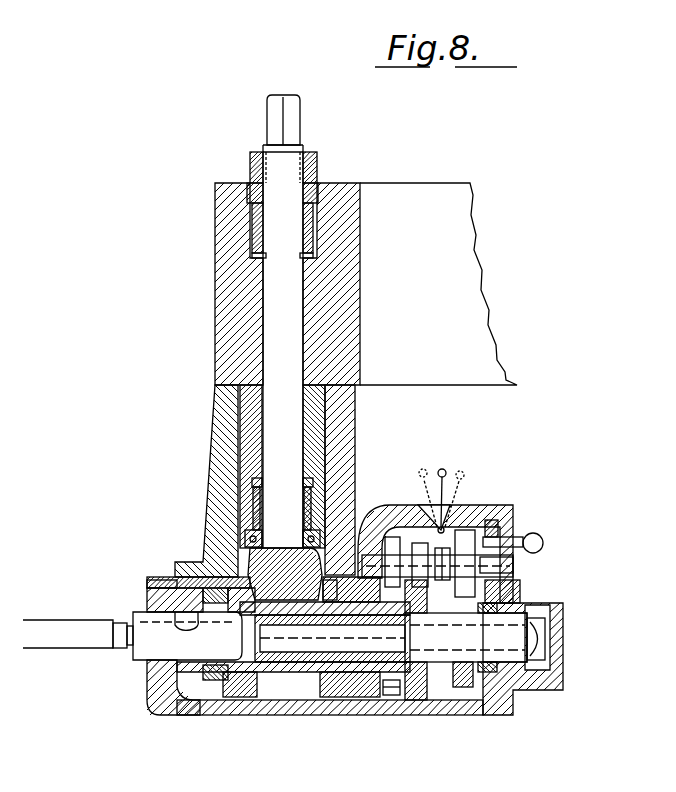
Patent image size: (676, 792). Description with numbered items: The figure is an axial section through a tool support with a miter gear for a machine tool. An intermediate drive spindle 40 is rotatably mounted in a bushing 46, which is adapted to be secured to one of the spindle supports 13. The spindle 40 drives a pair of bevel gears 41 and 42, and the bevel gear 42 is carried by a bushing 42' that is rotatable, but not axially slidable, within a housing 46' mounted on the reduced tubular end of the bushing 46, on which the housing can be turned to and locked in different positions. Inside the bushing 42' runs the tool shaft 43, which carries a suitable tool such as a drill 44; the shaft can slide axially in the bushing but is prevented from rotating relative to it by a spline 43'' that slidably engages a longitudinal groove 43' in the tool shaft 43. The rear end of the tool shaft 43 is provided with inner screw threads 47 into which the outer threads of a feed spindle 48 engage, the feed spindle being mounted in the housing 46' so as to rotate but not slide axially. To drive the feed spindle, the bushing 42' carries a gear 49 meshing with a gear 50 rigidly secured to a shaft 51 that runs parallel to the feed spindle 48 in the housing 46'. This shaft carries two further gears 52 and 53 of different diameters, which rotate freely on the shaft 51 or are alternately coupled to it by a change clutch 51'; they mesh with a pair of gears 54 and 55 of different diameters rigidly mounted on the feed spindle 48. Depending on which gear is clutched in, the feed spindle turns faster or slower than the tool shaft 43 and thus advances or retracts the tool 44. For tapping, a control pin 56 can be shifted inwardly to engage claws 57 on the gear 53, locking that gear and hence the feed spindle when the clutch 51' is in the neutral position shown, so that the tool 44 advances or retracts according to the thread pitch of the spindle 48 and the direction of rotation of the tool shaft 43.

The spindle support 13 is at (433, 192).
The intermediate drive spindle 40 is at (275, 305).
The bevel gear 41 is at (240, 555).
The bevel gear 42 is at (189, 573).
The bushing 42' is at (285, 555).
The tool shaft 43 is at (165, 654).
The longitudinal groove 43' is at (315, 705).
The spline 43'' is at (157, 624).
The drill 44 is at (57, 630).
The bushing 46 is at (257, 284).
The housing 46' is at (359, 570).
The inner screw threads 47 is at (372, 680).
The feed spindle 48 is at (320, 637).
The gear 49 is at (393, 687).
The gear 50 is at (388, 505).
The shaft 51 is at (445, 577).
The change clutch 51' is at (441, 484).
The gear 52 is at (422, 540).
The gear 53 is at (465, 513).
The gear 54 is at (415, 690).
The gear 55 is at (467, 677).
The control pin 56 is at (543, 540).
The claws 57 is at (510, 567).